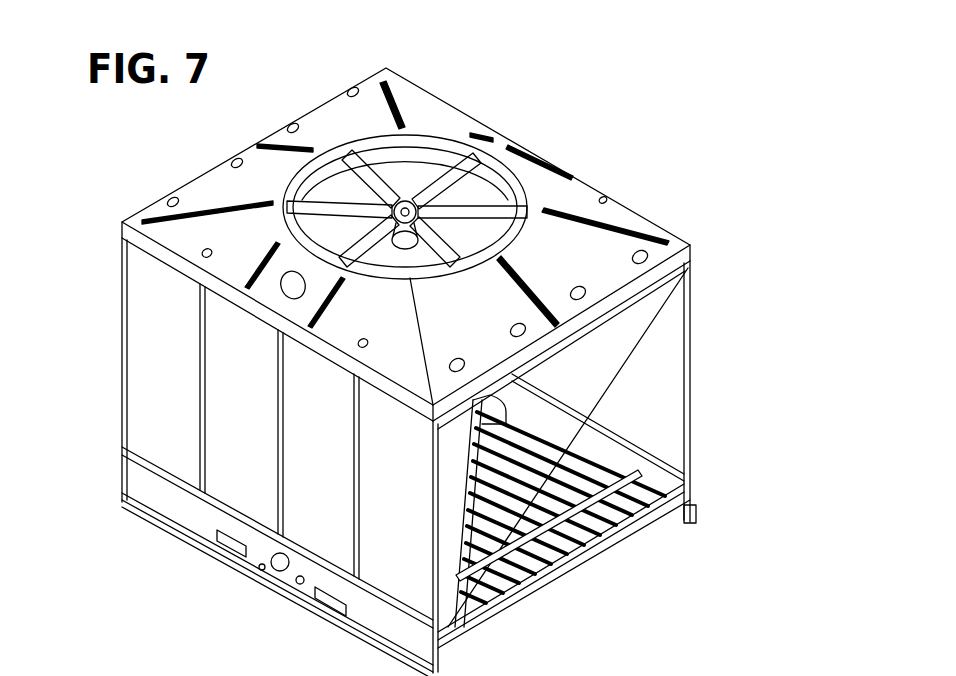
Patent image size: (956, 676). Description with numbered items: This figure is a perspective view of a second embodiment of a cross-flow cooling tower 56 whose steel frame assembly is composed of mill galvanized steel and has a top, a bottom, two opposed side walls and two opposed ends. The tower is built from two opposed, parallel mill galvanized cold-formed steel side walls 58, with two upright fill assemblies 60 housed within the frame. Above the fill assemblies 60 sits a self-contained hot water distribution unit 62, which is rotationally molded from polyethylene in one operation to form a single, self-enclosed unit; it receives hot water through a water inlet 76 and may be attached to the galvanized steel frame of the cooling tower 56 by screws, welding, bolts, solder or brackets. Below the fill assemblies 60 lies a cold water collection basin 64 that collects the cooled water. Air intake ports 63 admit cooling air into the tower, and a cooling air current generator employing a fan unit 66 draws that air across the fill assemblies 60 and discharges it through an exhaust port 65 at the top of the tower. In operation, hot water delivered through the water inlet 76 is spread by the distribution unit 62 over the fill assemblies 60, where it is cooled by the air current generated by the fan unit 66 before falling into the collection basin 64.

The cooling tower 56 is at (650, 143).
The side walls 58 is at (690, 385).
The fill assemblies 60 is at (530, 588).
The hot water distribution unit 62 is at (607, 273).
The air intake ports 63 is at (116, 209).
The cold water collection basin 64 is at (607, 538).
The exhaust port 65 is at (418, 135).
The fan unit 66 is at (447, 177).
The water inlet 76 is at (281, 284).